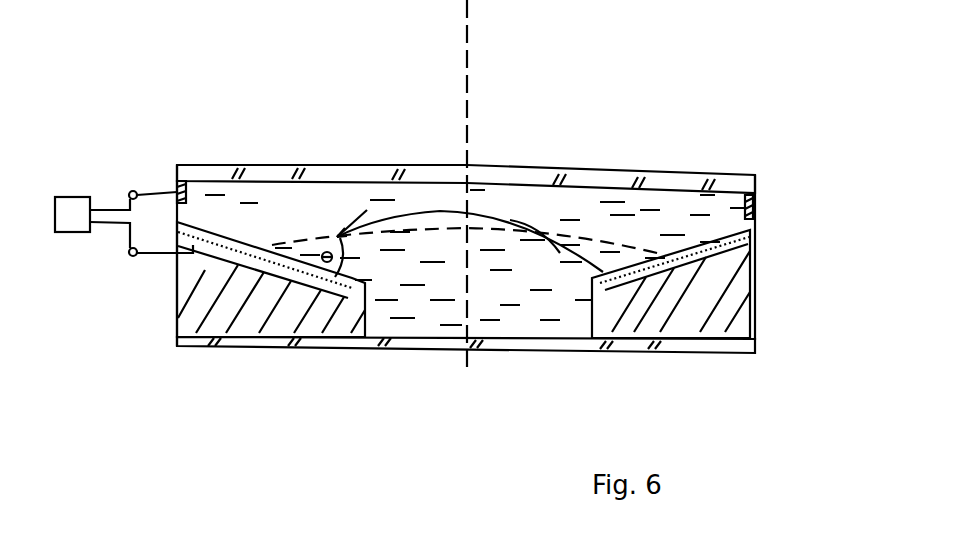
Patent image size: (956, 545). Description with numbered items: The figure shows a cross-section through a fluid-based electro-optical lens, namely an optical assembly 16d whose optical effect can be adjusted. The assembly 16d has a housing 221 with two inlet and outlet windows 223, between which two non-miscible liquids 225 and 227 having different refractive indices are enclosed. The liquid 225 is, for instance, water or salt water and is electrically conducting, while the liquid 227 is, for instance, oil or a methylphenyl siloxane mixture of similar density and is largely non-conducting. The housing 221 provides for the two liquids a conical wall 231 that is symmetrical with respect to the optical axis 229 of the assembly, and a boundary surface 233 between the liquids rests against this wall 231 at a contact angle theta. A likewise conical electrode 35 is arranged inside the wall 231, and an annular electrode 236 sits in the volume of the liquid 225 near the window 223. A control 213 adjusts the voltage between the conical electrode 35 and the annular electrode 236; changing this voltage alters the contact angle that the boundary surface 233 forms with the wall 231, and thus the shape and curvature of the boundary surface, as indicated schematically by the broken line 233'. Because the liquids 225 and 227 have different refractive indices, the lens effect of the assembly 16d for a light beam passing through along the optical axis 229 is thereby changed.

The optical assembly 16d is at (513, 110).
The conical electrode 35 is at (195, 267).
The control 213 is at (67, 197).
The housing 221 is at (757, 288).
The inlet and outlet windows 223 is at (757, 178).
The liquid 225 is at (262, 224).
The liquid 227 is at (475, 257).
The optical axis 229 is at (463, 125).
The conical wall 231 is at (723, 235).
The boundary surface 233 is at (560, 178).
The boundary surface (changed shape) 233' is at (475, 170).
The annular electrode 236 is at (183, 190).